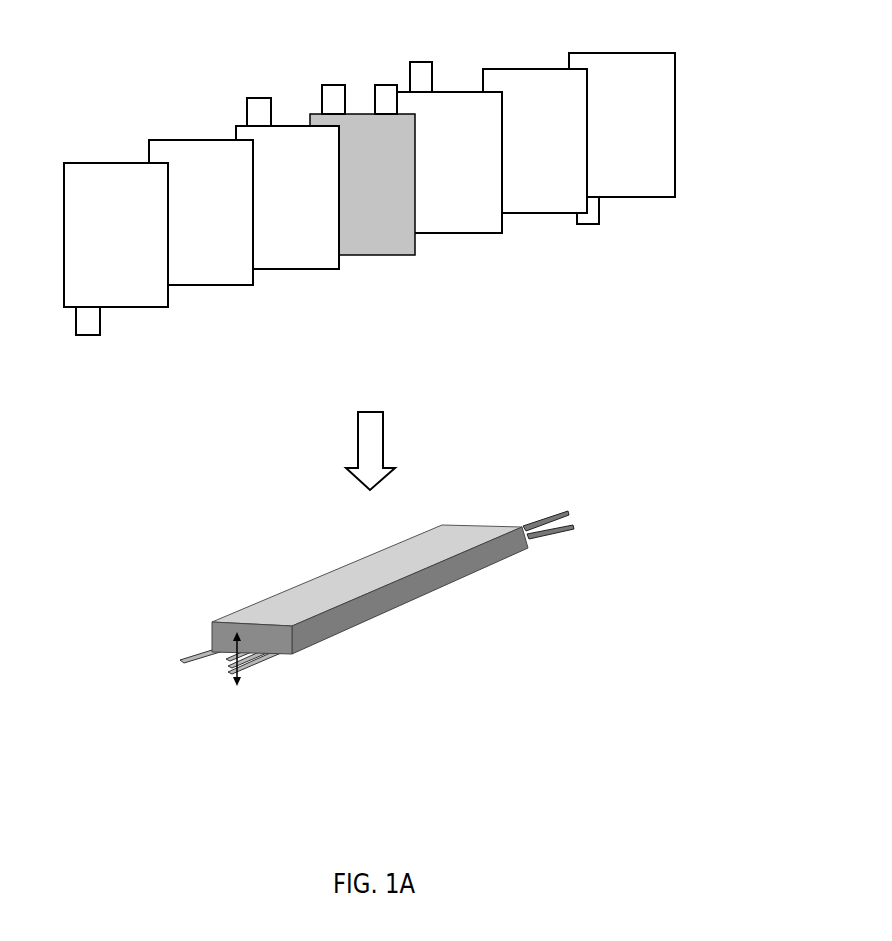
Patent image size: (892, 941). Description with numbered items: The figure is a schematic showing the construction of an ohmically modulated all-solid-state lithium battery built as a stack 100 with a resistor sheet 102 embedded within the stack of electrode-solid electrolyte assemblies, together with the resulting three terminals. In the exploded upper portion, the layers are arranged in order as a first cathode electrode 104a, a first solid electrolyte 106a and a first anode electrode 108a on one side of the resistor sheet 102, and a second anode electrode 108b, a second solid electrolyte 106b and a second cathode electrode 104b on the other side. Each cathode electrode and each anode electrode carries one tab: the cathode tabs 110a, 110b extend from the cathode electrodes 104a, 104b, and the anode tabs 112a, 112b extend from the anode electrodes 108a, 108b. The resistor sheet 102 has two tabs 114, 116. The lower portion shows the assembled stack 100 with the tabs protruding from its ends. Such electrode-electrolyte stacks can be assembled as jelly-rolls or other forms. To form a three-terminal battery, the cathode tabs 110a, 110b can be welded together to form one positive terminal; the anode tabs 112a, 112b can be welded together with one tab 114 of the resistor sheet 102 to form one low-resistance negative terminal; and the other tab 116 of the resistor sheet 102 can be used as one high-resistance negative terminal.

The stack 100 is at (146, 68).
The resistor sheet 102 is at (400, 255).
The cathode electrode 104a is at (148, 307).
The cathode electrode 104b is at (658, 197).
The solid electrolyte 106a is at (235, 285).
The solid electrolyte 106b is at (568, 213).
The anode electrode 108a is at (327, 269).
The anode electrode 108b is at (487, 233).
The cathode tab 110a is at (90, 340).
The cathode tab 110b is at (599, 224).
The anode tab 112a is at (259, 98).
The anode tab 112b is at (417, 62).
The resistor sheet tab 114 is at (335, 85).
The resistor sheet tab 116 is at (380, 85).